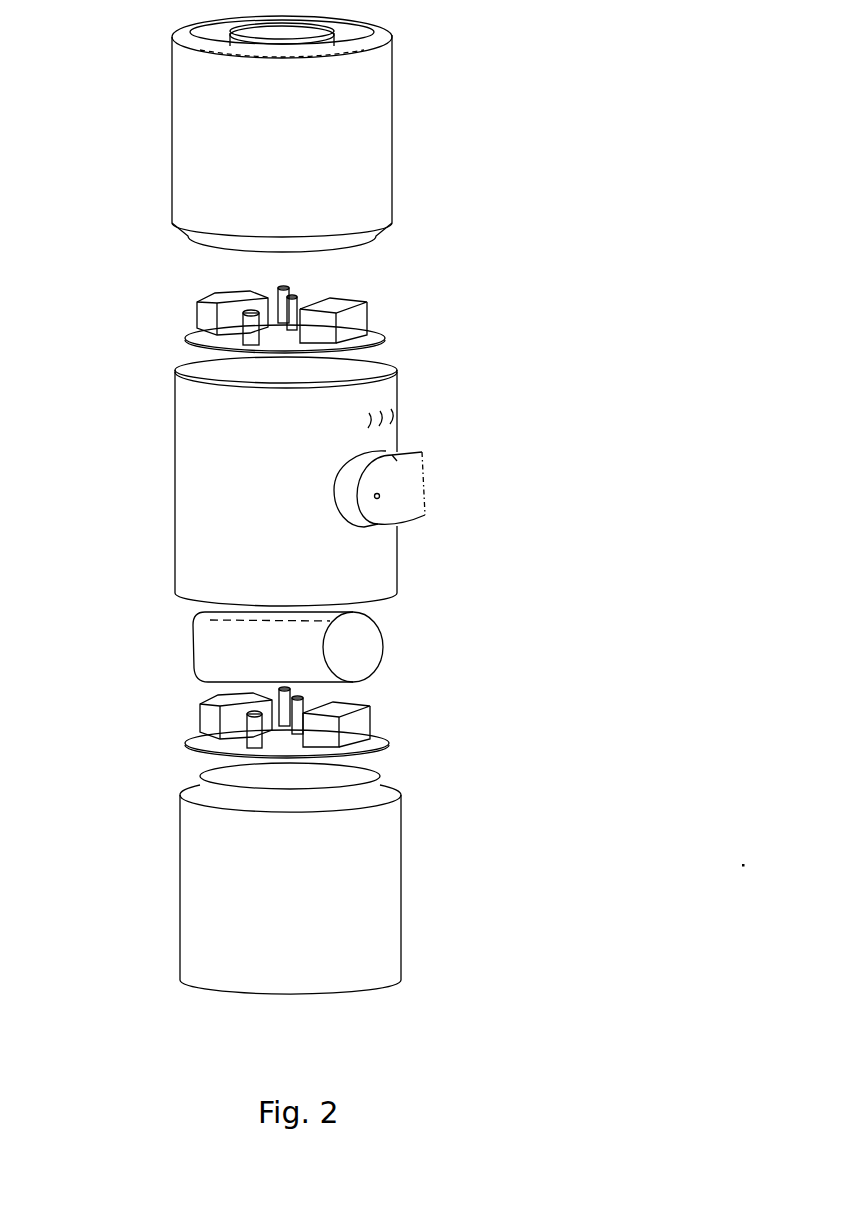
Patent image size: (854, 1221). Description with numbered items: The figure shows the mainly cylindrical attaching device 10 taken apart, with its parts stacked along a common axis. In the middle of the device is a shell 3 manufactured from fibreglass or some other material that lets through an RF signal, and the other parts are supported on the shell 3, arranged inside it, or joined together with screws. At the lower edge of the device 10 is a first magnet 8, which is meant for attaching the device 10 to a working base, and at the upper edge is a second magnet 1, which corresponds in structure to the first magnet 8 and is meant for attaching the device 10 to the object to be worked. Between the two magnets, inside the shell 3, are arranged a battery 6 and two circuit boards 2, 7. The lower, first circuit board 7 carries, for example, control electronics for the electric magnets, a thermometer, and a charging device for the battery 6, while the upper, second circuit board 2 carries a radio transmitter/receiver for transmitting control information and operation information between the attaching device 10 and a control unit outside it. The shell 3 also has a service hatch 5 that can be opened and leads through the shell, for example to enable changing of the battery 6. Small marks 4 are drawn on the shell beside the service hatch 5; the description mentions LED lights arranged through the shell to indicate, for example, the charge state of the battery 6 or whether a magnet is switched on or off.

The attaching device 10 is at (597, 93).
The second magnet 1 is at (368, 134).
The second circuit board 2 is at (352, 320).
The shell 3 is at (190, 435).
The markings 4 is at (393, 413).
The service hatch 5 is at (414, 497).
The battery 6 is at (367, 643).
The first circuit board 7 is at (205, 713).
The first magnet 8 is at (383, 890).